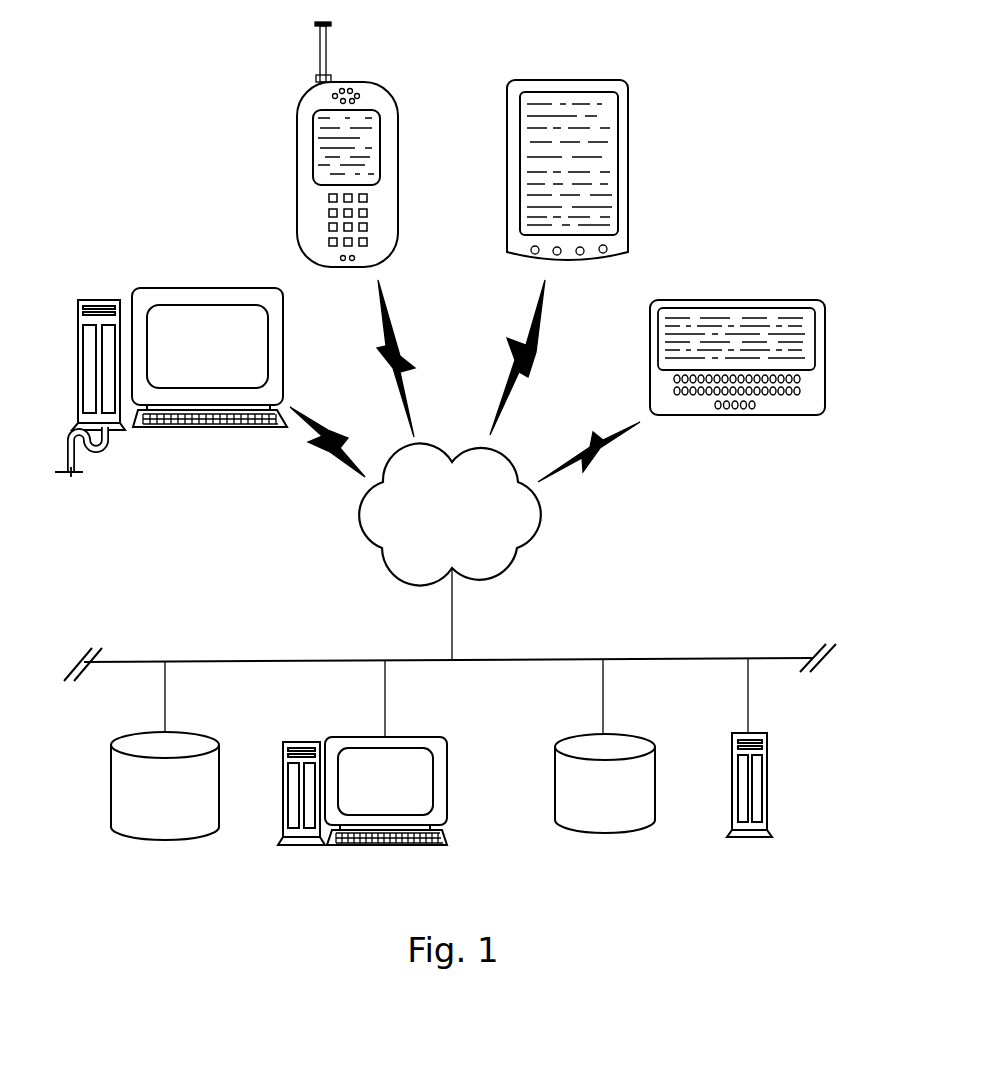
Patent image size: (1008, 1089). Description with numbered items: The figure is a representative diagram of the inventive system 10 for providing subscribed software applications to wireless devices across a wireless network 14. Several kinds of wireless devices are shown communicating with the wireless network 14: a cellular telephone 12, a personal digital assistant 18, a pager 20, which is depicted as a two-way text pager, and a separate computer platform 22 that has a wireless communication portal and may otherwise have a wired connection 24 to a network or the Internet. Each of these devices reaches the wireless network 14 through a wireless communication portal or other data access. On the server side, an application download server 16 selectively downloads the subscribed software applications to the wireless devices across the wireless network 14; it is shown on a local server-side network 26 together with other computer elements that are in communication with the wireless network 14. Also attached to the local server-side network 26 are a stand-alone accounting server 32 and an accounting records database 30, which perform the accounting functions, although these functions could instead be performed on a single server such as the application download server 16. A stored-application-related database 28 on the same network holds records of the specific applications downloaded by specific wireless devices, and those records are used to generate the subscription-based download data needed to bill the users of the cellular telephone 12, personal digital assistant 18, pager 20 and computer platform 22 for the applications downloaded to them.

The inventive system 10 is at (737, 155).
The cellular telephone 12 is at (386, 82).
The wireless network 14 is at (543, 516).
The application download server 16 is at (362, 737).
The personal digital assistant 18 is at (570, 80).
The pager 20 is at (766, 415).
The computer platform 22 is at (198, 288).
The wired connection 24 is at (113, 462).
The local server-side network 26 is at (645, 659).
The stored-application-related database 28 is at (111, 787).
The accounting records database 30 is at (555, 784).
The accounting server 32 is at (767, 763).